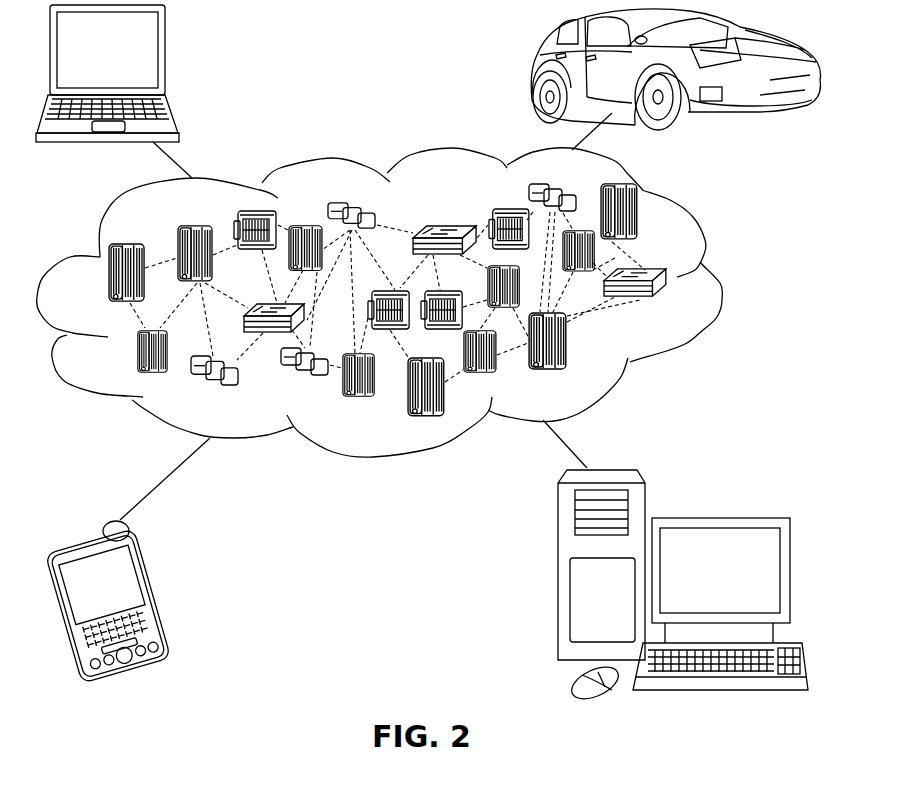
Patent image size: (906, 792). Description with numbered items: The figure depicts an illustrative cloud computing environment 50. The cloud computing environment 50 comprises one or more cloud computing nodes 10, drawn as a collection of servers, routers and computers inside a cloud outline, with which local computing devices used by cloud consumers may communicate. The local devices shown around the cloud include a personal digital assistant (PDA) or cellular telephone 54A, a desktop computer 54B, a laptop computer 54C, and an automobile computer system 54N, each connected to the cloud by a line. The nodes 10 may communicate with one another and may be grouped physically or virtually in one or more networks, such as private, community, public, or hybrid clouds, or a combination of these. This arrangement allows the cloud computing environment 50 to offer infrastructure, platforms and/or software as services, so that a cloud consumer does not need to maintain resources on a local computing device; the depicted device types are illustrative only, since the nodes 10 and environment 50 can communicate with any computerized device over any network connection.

The cloud computing nodes 10 is at (669, 305).
The cloud computing environment 50 is at (717, 283).
The personal digital assistant (PDA) or cellular telephone 54A is at (157, 597).
The desktop computer 54B is at (718, 517).
The laptop computer 54C is at (164, 57).
The automobile computer system 54N is at (533, 70).